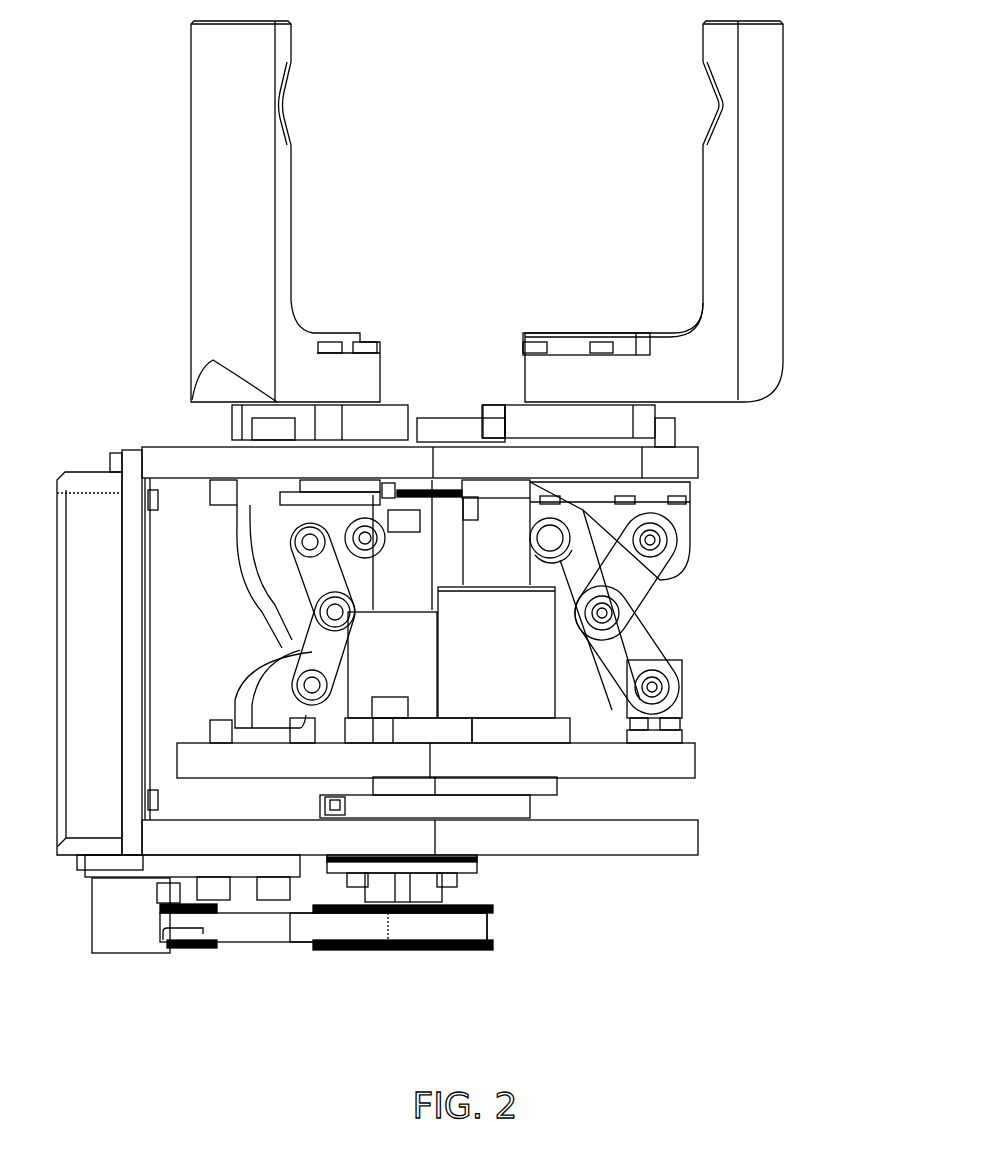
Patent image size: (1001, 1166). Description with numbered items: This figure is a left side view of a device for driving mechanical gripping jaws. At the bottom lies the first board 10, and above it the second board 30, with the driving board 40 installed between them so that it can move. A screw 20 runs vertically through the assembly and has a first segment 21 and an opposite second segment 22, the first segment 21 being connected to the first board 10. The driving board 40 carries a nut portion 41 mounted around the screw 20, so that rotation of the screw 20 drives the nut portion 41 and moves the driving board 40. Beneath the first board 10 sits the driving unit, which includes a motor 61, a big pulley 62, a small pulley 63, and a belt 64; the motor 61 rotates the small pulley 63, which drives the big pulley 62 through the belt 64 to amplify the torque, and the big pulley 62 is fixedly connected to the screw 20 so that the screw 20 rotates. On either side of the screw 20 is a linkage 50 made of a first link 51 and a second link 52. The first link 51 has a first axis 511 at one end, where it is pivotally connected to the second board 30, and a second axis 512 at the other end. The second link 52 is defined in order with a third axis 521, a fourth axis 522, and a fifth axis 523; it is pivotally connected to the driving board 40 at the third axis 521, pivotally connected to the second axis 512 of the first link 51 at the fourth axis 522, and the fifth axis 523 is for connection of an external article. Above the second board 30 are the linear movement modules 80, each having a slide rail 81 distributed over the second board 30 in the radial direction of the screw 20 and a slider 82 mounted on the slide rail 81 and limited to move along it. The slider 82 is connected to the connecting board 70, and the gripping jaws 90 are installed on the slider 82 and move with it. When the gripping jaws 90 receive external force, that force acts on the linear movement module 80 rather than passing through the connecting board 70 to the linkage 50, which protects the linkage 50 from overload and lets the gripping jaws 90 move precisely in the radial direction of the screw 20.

The first board 10 is at (700, 838).
The screw 20 is at (413, 553).
The first segment 21 is at (410, 785).
The second segment 22 is at (405, 497).
The second board 30 is at (700, 463).
The driving board 40 is at (700, 760).
The nut portion 41 is at (372, 660).
The linkage 50 is at (721, 628).
The first link 51 is at (660, 585).
The second link 52 is at (662, 632).
The first axis 511 is at (652, 540).
The second axis 512 is at (726, 632).
The third axis 521 is at (655, 687).
The fourth axis 522 is at (605, 613).
The fifth axis 523 is at (553, 538).
The motor 61 is at (87, 535).
The big pulley 62 is at (435, 950).
The small pulley 63 is at (210, 948).
The belt 64 is at (250, 928).
The connecting board 70 is at (572, 513).
The linear movement module 80 is at (843, 325).
The slide rail 81 is at (675, 430).
The slider 82 is at (655, 410).
The griping jaws 90 is at (783, 203).